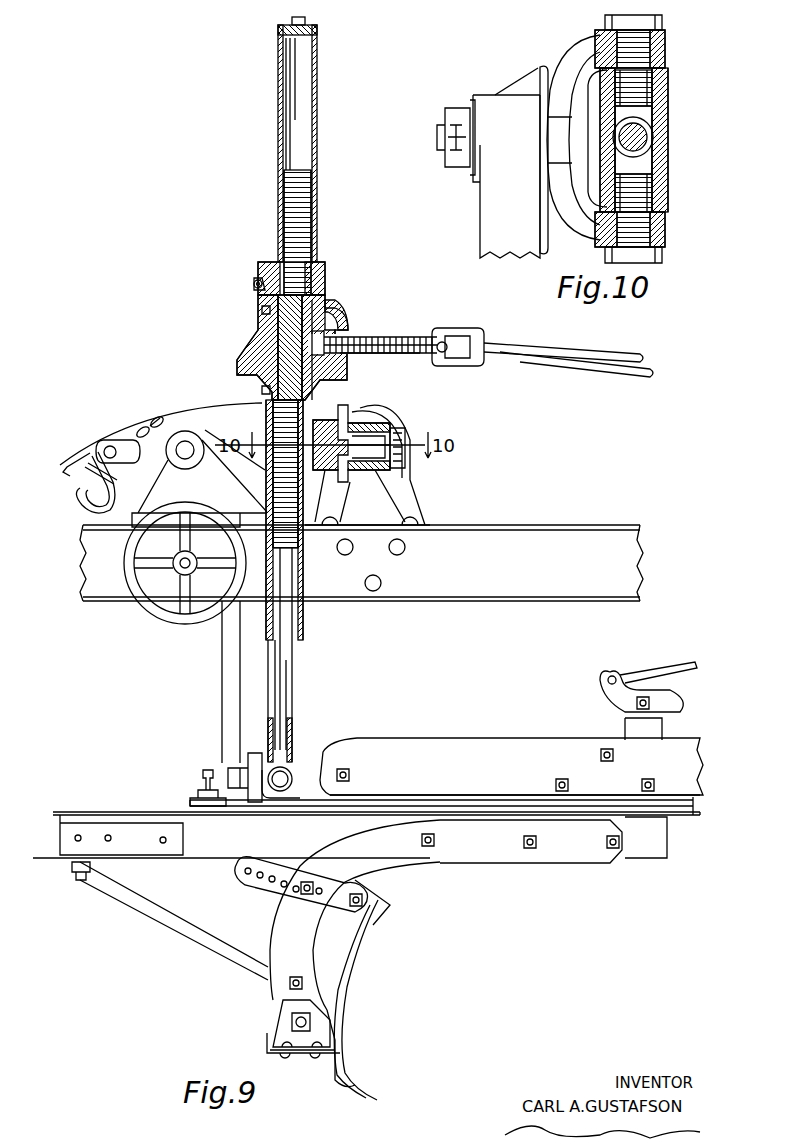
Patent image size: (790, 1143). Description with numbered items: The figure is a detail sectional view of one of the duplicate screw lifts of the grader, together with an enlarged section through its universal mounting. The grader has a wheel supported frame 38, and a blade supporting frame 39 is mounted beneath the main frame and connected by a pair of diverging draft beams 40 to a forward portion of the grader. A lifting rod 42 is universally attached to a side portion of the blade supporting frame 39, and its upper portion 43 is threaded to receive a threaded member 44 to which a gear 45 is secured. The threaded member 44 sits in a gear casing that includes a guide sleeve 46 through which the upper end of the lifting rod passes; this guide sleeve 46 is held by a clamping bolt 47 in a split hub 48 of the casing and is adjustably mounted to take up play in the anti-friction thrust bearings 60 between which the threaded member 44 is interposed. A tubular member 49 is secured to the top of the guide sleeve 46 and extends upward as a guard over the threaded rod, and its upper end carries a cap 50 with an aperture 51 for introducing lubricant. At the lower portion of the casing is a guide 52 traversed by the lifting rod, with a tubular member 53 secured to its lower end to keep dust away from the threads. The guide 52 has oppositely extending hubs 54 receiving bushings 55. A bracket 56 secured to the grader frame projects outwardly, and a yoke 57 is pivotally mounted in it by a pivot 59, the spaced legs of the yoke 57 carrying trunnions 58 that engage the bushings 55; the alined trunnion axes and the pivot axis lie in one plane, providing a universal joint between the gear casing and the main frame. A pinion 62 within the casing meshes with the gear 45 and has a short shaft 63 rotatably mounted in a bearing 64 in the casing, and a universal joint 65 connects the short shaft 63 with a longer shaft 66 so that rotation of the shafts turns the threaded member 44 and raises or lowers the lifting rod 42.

In FIG. 9, the wheel supported frame 38 is at (524, 542).
In FIG. 9, the blade supporting frame 39 is at (412, 805).
In FIG. 9, the draft beams 40 is at (505, 752).
In FIG. 9, the lifting rod 42 is at (294, 700).
In FIG. 10, the lifting rod 42 is at (654, 142).
In FIG. 9, the threaded upper portion 43 is at (302, 240).
In FIG. 9, the threaded member 44 is at (270, 340).
In FIG. 9, the gear 45 is at (246, 362).
In FIG. 9, the guide sleeve 46 is at (327, 265).
In FIG. 9, the clamping bolt 47 is at (252, 283).
In FIG. 9, the split hub 48 is at (330, 304).
In FIG. 9, the tubular member 49 is at (316, 148).
In FIG. 9, the cap 50 is at (316, 46).
In FIG. 9, the aperture 51 is at (282, 32).
In FIG. 9, the guide 52 is at (270, 428).
In FIG. 9, the tubular member 53 is at (306, 592).
In FIG. 10, the hubs 54 is at (668, 74).
In FIG. 10, the bushings 55 is at (662, 90).
In FIG. 9, the bracket 56 is at (415, 502).
In FIG. 10, the bracket 56 is at (487, 232).
In FIG. 9, the yoke 57 is at (330, 418).
In FIG. 10, the yoke 57 is at (573, 232).
In FIG. 10, the trunnions 58 is at (665, 46).
In FIG. 9, the pivot 59 is at (372, 440).
In FIG. 10, the pivot 59 is at (436, 146).
In FIG. 9, the anti-friction thrust bearings 60 is at (262, 310).
In FIG. 9, the pinion 62 is at (333, 330).
In FIG. 9, the short shaft 63 is at (385, 340).
In FIG. 9, the bearing 64 is at (372, 360).
In FIG. 9, the universal joint 65 is at (440, 340).
In FIG. 9, the longer shaft 66 is at (583, 350).